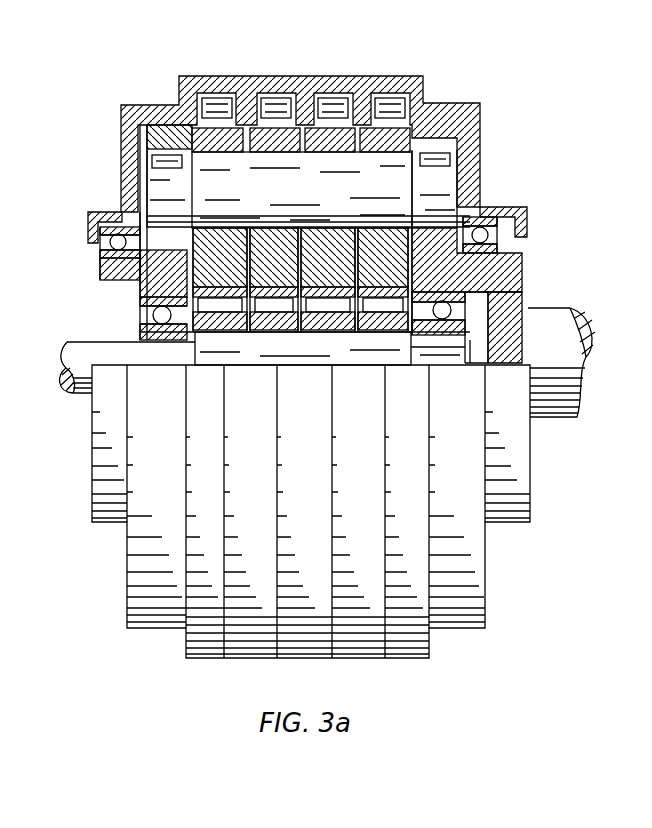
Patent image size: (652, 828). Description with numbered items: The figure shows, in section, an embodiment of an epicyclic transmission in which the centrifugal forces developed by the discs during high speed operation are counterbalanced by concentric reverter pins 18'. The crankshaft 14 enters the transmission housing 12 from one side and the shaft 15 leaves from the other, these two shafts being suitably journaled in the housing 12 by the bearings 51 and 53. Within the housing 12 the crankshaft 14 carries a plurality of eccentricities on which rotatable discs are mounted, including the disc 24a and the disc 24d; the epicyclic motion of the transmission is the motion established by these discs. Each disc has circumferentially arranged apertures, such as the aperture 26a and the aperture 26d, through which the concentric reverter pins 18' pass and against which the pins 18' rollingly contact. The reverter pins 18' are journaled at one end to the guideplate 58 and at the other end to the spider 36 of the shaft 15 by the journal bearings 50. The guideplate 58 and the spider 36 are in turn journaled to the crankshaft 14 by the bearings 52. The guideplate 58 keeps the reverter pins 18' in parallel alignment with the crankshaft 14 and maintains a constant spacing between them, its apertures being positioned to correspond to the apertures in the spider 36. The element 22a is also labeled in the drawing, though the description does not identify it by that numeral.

The transmission housing 12 is at (480, 112).
The crankshaft 14 is at (80, 348).
The shaft 15 is at (583, 325).
The concentric reverter pins 18' is at (366, 190).
The gear tooth 22a is at (337, 77).
The disc 24a is at (260, 77).
The disc 24d is at (440, 112).
The aperture 26a is at (213, 132).
The aperture 26d is at (392, 150).
The spider 36 is at (507, 265).
The journal bearings 50 is at (162, 165).
The bearing 51 is at (492, 238).
The bearings 52 is at (153, 317).
The bearing 53 is at (102, 247).
The guideplate 58 is at (158, 132).